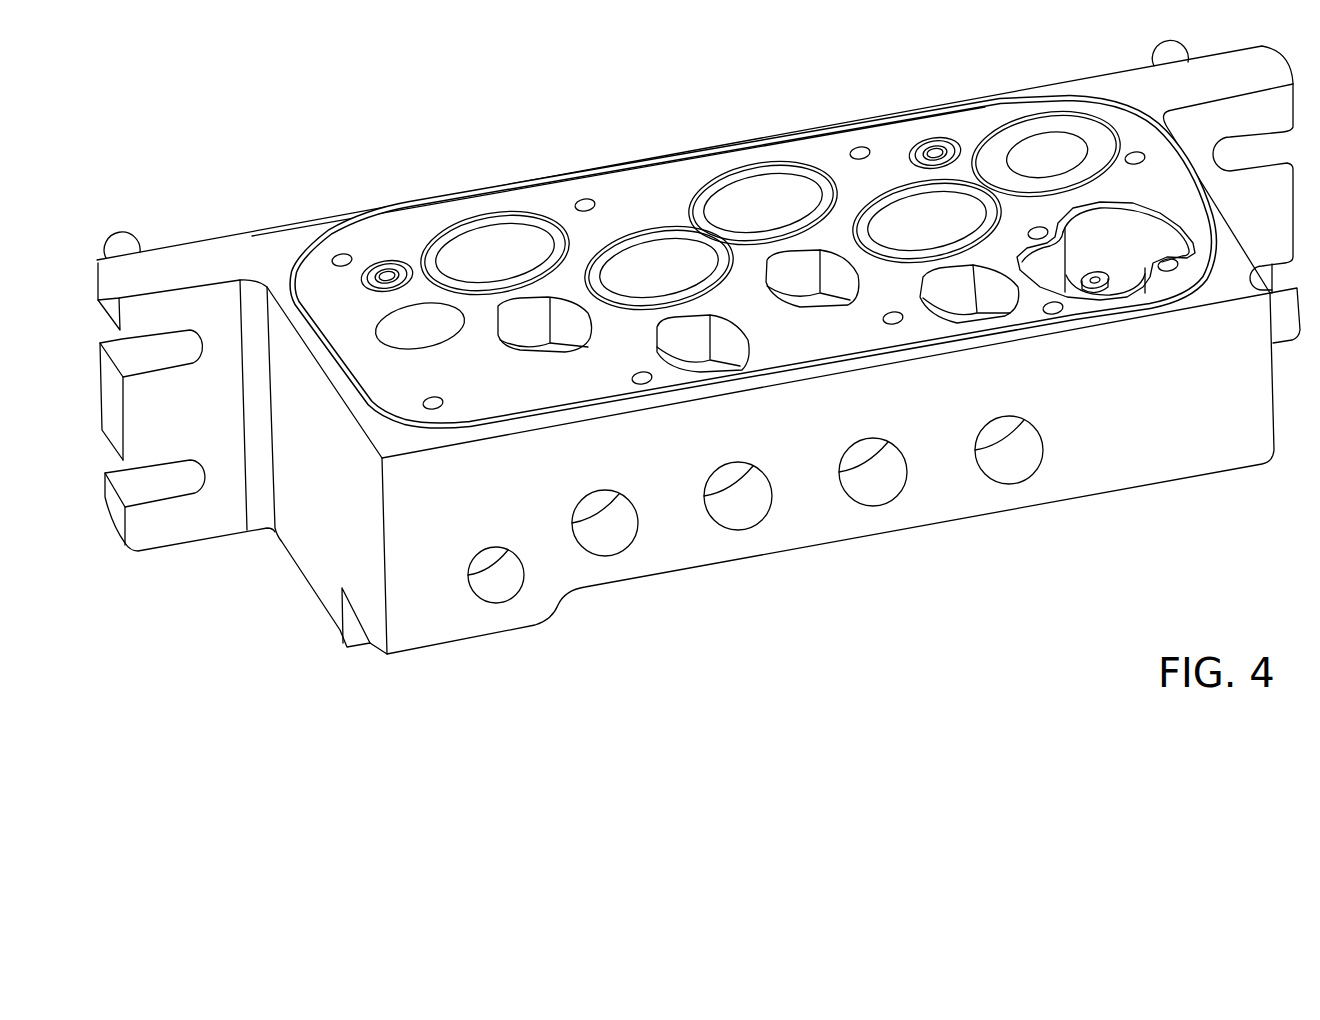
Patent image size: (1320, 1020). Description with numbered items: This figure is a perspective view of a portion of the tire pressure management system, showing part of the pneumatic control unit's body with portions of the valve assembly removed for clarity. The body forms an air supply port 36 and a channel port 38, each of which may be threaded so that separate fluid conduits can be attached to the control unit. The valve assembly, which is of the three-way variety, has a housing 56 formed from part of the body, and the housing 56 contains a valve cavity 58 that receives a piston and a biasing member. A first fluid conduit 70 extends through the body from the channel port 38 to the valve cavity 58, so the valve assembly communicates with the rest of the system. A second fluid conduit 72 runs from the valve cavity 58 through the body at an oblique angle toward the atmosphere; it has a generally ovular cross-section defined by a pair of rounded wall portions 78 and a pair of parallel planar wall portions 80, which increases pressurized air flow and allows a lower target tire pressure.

The air supply port 36 is at (812, 515).
The channel port 38 is at (642, 516).
The first fluid conduit 70 is at (594, 537).
The housing 56 is at (536, 298).
The valve cavity 58 is at (473, 245).
The rounded wall portions 78 is at (468, 338).
The planar wall portions 80 is at (547, 300).
The second fluid conduit 72 is at (538, 347).